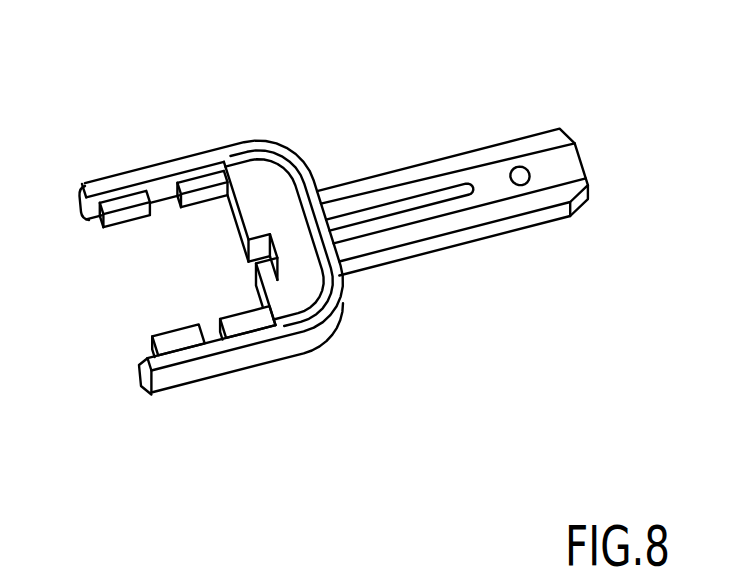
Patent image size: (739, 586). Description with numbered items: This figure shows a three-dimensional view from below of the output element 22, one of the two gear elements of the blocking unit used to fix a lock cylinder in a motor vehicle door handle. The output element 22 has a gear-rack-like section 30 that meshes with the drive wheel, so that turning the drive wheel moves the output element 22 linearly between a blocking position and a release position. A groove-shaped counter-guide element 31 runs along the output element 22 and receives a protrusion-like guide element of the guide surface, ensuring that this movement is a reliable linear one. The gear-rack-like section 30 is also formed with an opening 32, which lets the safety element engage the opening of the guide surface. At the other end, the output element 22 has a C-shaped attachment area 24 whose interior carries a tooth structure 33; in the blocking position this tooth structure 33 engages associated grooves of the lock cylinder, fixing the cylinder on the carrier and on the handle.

The output element 22 is at (331, 266).
The attachment area 24 is at (207, 326).
The gear-rack-like section 30 is at (478, 235).
The counter-guide element 31 is at (402, 210).
The opening 32 is at (515, 170).
The tooth structure 33 is at (243, 322).